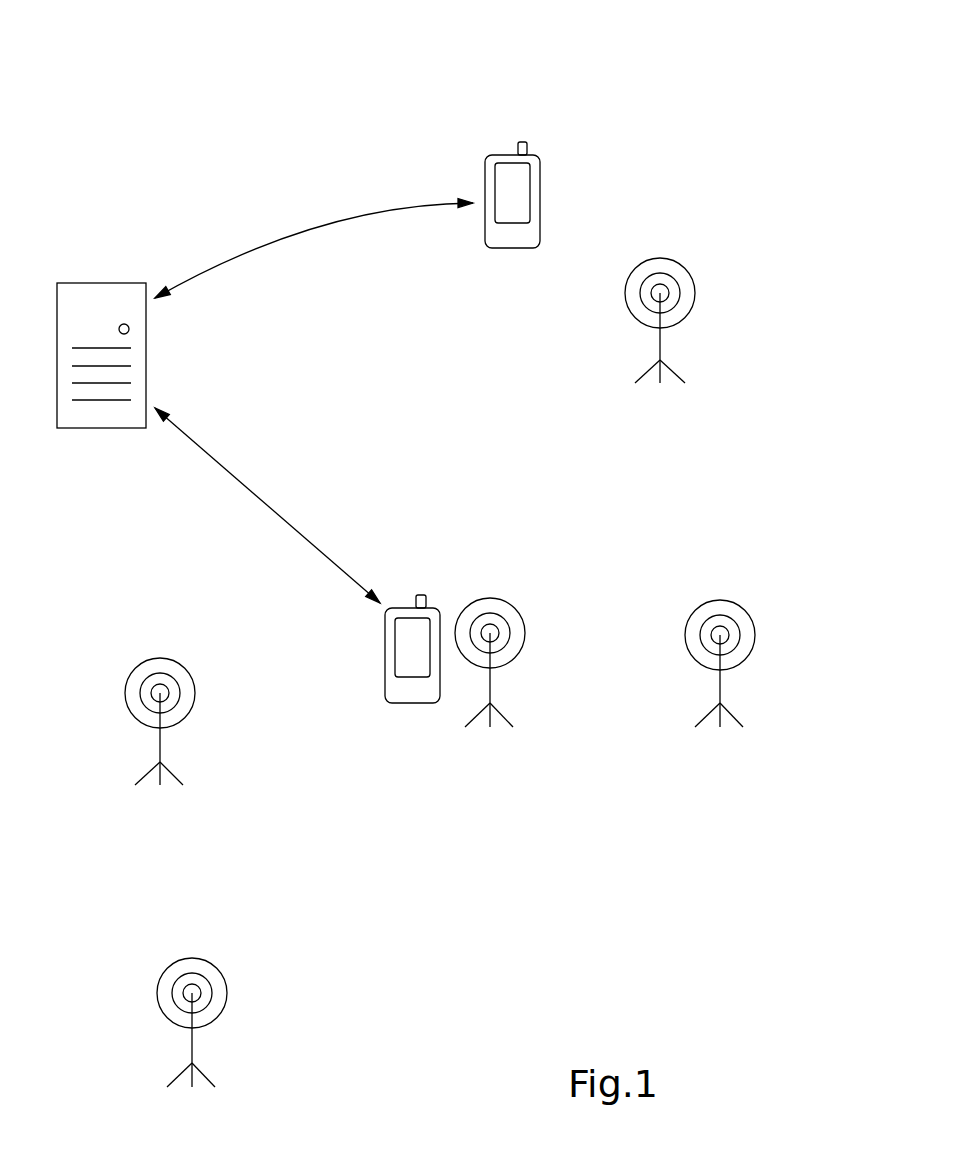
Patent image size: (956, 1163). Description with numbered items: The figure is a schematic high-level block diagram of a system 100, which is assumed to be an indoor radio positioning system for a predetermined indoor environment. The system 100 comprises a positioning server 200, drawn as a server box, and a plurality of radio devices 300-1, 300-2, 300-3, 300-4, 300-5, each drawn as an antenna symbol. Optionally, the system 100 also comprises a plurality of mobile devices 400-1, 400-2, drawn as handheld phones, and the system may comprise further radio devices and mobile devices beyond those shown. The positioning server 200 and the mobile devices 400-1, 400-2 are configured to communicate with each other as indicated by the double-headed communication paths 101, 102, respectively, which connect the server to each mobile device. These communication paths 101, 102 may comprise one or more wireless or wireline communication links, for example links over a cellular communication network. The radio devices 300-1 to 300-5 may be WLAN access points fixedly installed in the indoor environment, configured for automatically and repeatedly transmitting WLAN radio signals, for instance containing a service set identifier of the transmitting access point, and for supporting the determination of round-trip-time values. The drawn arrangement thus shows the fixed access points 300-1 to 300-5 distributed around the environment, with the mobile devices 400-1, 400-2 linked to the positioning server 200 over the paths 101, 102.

The system 100 is at (743, 95).
The communication path 101 is at (317, 228).
The communication path 102 is at (250, 483).
The positioning server 200 is at (90, 282).
The radio device 300-1 is at (698, 237).
The radio device 300-2 is at (507, 602).
The radio device 300-3 is at (738, 603).
The radio device 300-4 is at (177, 662).
The radio device 300-5 is at (208, 963).
The mobile device 400-1 is at (400, 705).
The mobile device 400-2 is at (500, 252).